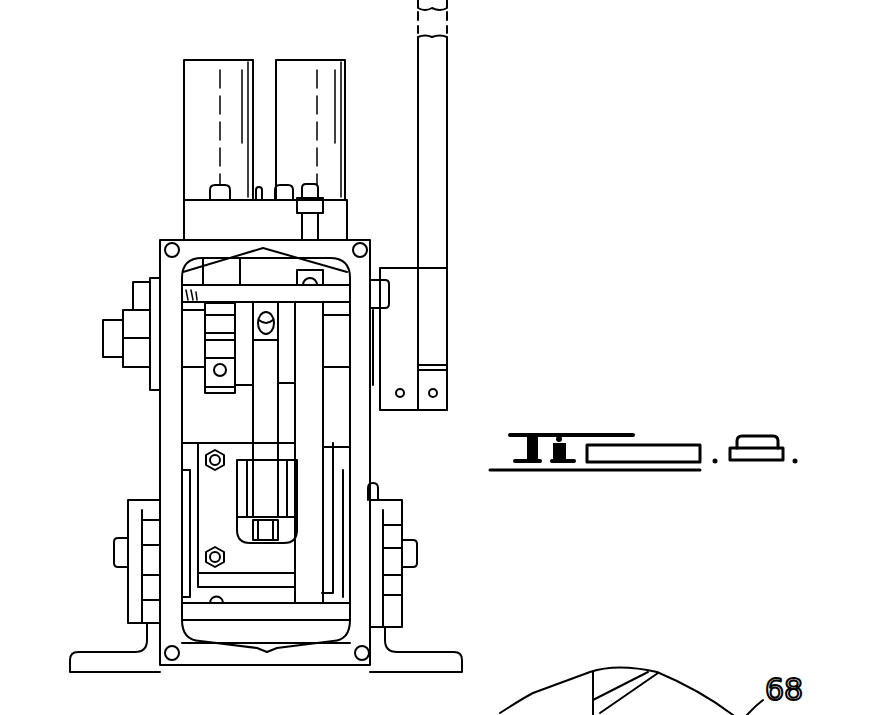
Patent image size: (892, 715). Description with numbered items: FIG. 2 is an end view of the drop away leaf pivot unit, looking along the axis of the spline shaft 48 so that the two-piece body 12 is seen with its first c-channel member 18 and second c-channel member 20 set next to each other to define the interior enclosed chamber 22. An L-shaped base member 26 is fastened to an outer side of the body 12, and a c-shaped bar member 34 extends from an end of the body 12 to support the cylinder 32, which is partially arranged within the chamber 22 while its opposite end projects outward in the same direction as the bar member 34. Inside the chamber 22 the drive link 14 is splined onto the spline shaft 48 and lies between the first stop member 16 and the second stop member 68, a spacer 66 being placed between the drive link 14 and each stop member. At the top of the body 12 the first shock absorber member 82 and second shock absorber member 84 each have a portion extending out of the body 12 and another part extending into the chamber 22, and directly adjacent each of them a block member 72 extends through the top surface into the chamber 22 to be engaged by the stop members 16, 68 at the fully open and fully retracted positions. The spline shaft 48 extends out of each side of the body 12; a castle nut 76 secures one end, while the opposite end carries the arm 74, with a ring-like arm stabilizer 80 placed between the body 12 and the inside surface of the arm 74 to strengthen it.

The body 12 is at (380, 450).
The drive link 14 is at (268, 503).
The first stop member 16 is at (313, 338).
The first c-channel member 18 is at (315, 657).
The second c-channel member 20 is at (168, 452).
The interior enclosed chamber 22 is at (227, 431).
The base member 26 is at (100, 658).
The cylinder 32 is at (247, 560).
The bar member 34 is at (137, 503).
The spline shaft 48 is at (188, 343).
The spacer 66 is at (290, 366).
The second stop member 68 is at (207, 385).
The block member 72 is at (323, 207).
The arm 74 is at (435, 78).
The castle nut 76 is at (135, 317).
The arm stabilizer 80 is at (410, 380).
The first shock absorber member 82 is at (307, 70).
The second shock absorber member 84 is at (212, 72).